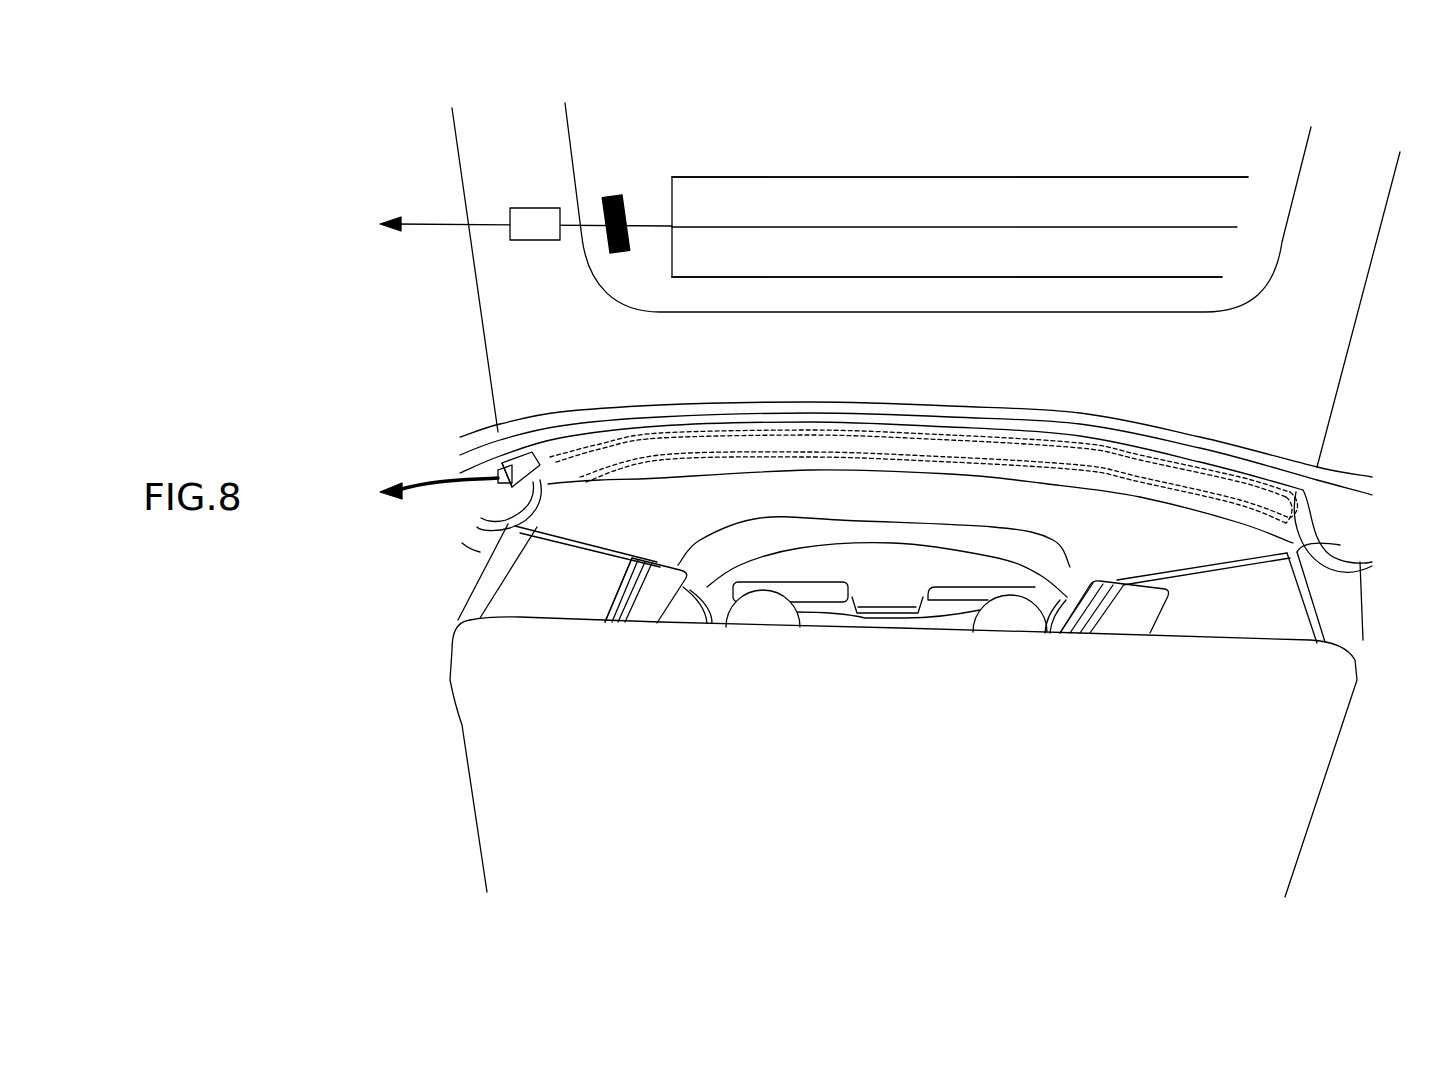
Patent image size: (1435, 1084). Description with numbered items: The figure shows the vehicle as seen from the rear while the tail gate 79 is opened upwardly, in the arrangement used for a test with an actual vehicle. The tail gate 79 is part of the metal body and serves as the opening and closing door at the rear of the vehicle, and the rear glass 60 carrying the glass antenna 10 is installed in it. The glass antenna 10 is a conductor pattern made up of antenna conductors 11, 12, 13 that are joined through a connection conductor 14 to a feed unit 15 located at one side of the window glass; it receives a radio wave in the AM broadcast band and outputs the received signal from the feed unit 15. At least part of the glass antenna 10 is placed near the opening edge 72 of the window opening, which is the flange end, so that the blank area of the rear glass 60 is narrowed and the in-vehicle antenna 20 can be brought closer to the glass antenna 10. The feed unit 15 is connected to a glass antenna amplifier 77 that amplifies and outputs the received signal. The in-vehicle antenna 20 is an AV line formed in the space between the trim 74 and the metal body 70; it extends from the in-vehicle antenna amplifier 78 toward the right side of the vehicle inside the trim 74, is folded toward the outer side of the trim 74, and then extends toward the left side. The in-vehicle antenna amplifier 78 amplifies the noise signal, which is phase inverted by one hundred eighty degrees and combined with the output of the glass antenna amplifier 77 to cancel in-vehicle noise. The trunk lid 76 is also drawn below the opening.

The glass antenna 10 is at (980, 211).
The antenna conductor 11 is at (1008, 276).
The antenna conductor 12 is at (1008, 226).
The antenna conductor 13 is at (1008, 176).
The connection conductor 14 is at (646, 222).
The feed unit 15 is at (608, 196).
The in-vehicle antenna 20 is at (1053, 484).
The rear glass 60 is at (1170, 152).
The metal body 70 is at (482, 476).
The opening edge 72 is at (568, 138).
The trim 74 is at (565, 496).
The trunk lid 76 is at (533, 680).
The glass antenna amplifier 77 is at (534, 208).
The in-vehicle antenna amplifier 78 is at (495, 501).
The tail gate 79 is at (485, 137).